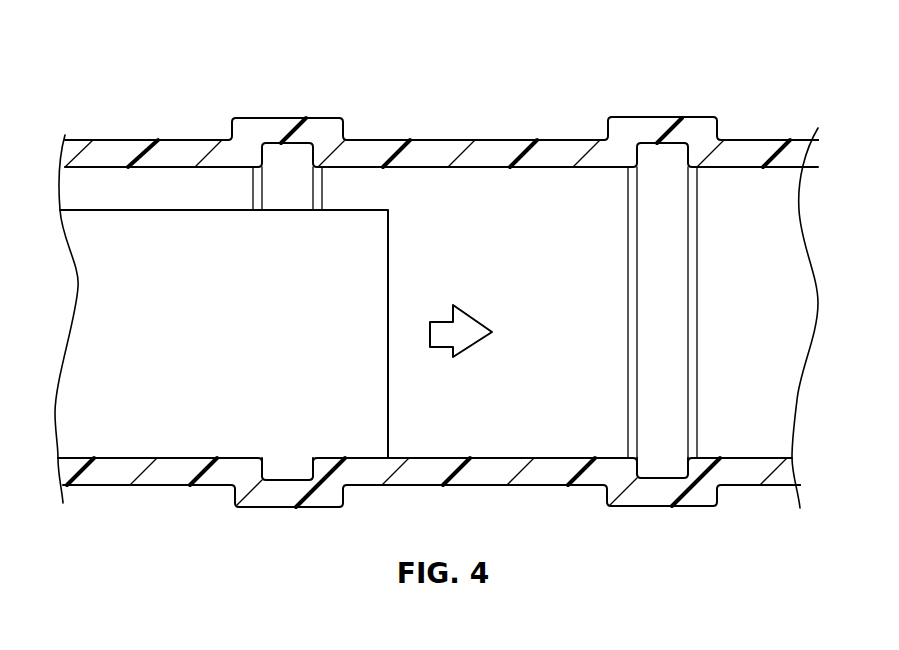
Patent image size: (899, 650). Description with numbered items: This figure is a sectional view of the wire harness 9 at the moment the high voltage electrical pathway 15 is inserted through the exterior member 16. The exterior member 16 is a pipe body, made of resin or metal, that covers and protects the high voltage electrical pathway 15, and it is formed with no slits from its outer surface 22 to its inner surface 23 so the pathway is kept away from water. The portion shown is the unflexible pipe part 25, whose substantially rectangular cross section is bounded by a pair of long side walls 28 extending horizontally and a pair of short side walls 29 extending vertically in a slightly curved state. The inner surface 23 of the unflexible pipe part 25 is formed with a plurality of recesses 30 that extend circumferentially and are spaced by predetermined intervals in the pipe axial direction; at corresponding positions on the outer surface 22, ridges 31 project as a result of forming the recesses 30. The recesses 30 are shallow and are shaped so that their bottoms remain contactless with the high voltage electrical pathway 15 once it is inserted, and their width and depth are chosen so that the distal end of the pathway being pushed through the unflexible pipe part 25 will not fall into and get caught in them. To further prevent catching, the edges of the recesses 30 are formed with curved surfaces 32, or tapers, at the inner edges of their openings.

The wire harness 9 is at (574, 82).
The high voltage electrical pathway 15 is at (136, 210).
The exterior member 16 is at (471, 139).
The outer surface 22 is at (105, 486).
The inner surface 23 is at (181, 450).
The unflexible pipe part 25 is at (545, 139).
The long side walls 28 is at (771, 139).
The short side walls 29 is at (802, 344).
The recesses 30 is at (284, 146).
The ridges 31 is at (292, 117).
The curved surfaces 32 is at (262, 458).